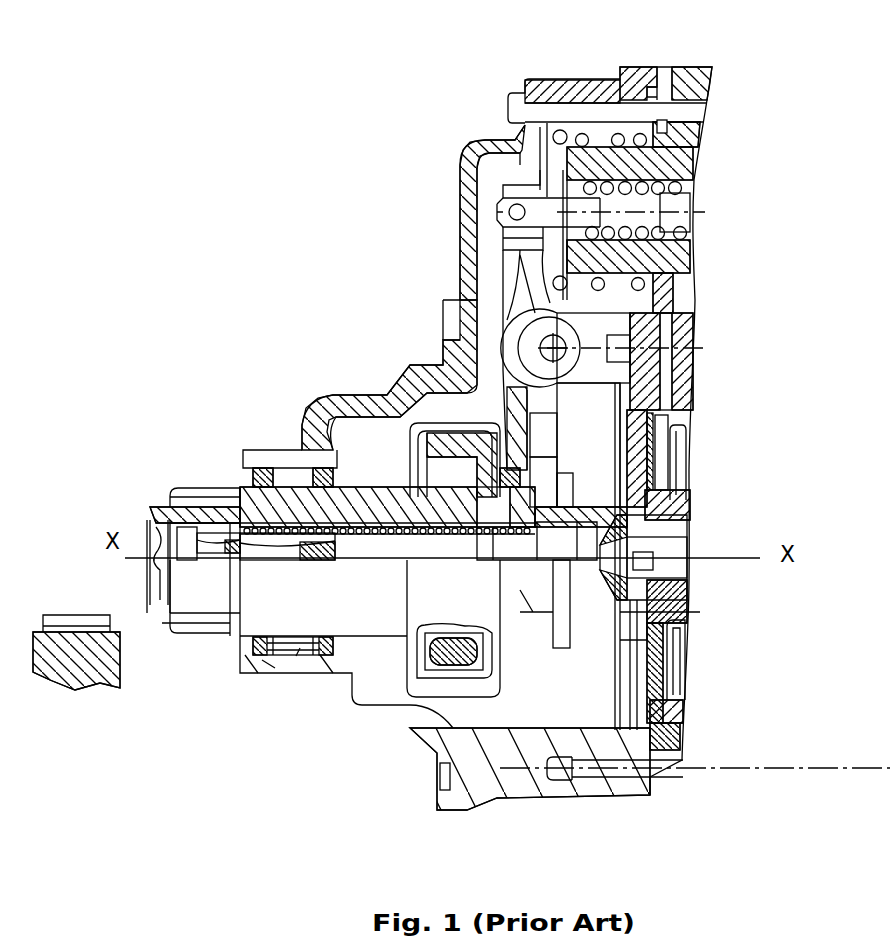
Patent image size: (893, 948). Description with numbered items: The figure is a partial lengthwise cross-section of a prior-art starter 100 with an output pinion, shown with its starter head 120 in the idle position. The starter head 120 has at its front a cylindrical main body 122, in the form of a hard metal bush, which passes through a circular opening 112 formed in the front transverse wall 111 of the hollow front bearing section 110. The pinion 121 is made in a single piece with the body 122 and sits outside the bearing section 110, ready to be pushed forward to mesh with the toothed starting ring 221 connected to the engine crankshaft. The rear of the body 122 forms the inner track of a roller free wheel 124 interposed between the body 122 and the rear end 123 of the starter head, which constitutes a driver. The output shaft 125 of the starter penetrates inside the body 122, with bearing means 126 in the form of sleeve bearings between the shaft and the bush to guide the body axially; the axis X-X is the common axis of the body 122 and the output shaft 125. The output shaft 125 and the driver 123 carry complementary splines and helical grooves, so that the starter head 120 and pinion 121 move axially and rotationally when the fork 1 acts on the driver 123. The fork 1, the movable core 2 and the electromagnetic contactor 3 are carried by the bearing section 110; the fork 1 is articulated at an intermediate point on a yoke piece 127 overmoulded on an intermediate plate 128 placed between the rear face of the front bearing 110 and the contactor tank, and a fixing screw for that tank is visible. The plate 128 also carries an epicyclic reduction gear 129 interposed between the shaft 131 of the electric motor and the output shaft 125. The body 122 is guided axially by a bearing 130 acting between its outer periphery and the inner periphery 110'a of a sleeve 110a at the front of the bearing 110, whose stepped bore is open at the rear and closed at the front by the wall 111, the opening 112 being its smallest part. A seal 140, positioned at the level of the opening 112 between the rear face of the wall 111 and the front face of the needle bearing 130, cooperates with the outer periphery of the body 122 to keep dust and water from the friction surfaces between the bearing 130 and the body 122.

The starter 100 is at (378, 303).
The fork 1 is at (530, 273).
The movable core 2 is at (540, 188).
The electromagnetic contactor 3 is at (597, 118).
The front bearing section 110 is at (445, 729).
The sleeve 110a is at (298, 656).
The inner periphery of the sleeve 110'a is at (231, 705).
The front transverse wall 111 is at (243, 650).
The circular opening 112 is at (230, 480).
The starter head 120 is at (262, 600).
The pinion 121 is at (200, 490).
The main body 122 is at (383, 470).
The rear end of the starter head 123 is at (583, 598).
The roller free wheel 124 is at (440, 645).
The output shaft 125 is at (383, 543).
The bearing means 126 is at (485, 615).
The yoke piece 127 is at (613, 320).
The intermediate plate 128 is at (667, 73).
The epicyclic reduction gear 129 is at (680, 717).
The bearing 130 is at (290, 651).
The shaft of the electric motor 131 is at (685, 552).
The seal 140 is at (240, 483).
The toothed starting ring 221 is at (100, 696).